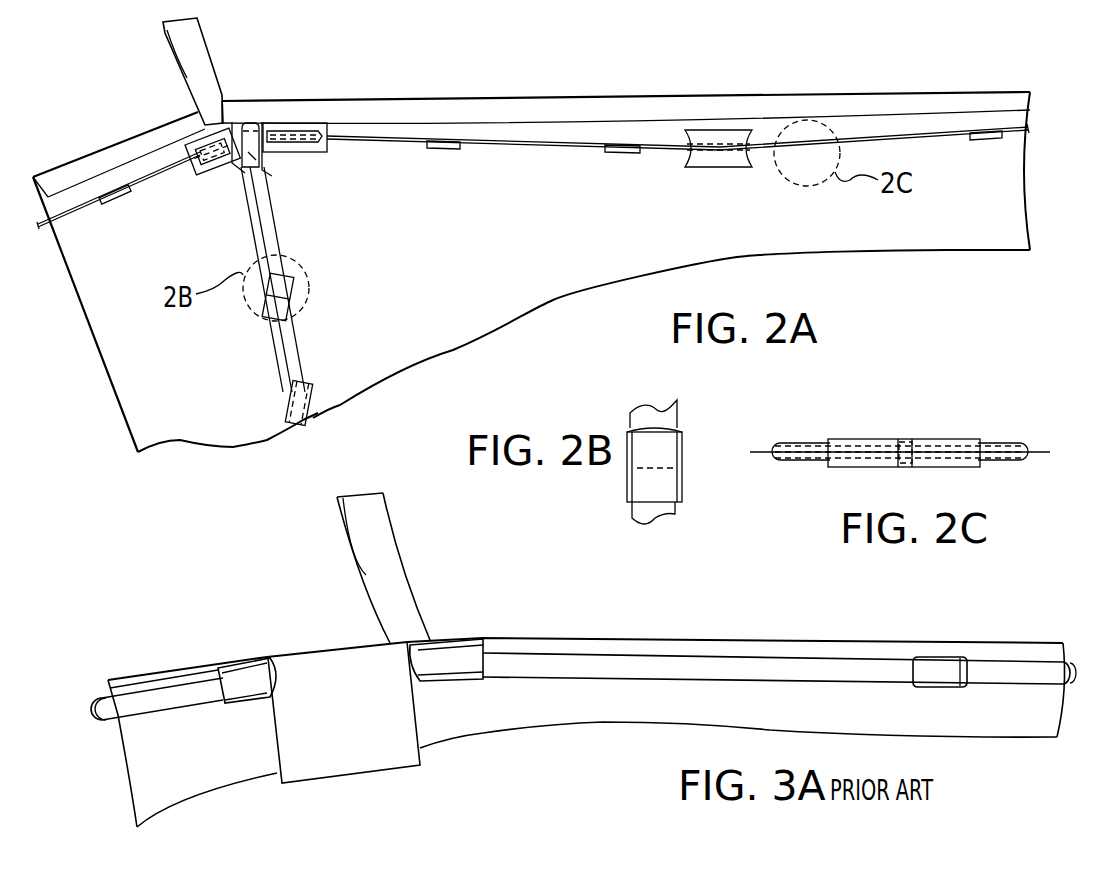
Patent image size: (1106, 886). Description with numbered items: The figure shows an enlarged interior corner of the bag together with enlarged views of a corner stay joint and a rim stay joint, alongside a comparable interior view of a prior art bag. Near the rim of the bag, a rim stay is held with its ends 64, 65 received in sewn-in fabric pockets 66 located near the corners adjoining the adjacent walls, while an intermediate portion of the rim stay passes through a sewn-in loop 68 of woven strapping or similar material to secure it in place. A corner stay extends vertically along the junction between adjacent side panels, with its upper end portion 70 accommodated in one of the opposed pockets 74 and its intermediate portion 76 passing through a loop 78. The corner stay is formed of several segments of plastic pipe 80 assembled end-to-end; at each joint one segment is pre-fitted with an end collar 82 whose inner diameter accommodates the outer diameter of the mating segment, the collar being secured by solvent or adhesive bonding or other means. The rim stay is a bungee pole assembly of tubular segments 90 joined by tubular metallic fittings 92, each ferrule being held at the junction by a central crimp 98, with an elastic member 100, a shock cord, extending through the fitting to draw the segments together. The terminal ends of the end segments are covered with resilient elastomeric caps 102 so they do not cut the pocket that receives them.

In FIG. 2A, the end of the rim stay 64 is at (197, 147).
In FIG. 2A, the end of the rim stay 65 is at (273, 135).
In FIG. 2A, the sewn-in fabric pocket 66 is at (197, 110).
In FIG. 2A, the sewn-in loop 68 is at (712, 137).
In FIG. 2A, the upper end portion 70 is at (228, 165).
In FIG. 2A, the opposed pocket 74 is at (250, 155).
In FIG. 2A, the intermediate portion 76 is at (342, 356).
In FIG. 2A, the loop 78 is at (290, 410).
In FIG. 2A, the segment of plastic pipe 80 is at (287, 332).
In FIG. 2B, the segment of plastic pipe 80 is at (640, 412).
In FIG. 2A, the end collar 82 is at (277, 287).
In FIG. 2B, the end collar 82 is at (623, 487).
In FIG. 2A, the tubular segment 90 is at (545, 150).
In FIG. 2C, the tubular segment 90 is at (997, 442).
In FIG. 2A, the fitting 92 is at (620, 150).
In FIG. 2C, the fitting 92 is at (927, 440).
In FIG. 2C, the central crimp 98 is at (905, 442).
In FIG. 2C, the elastic member 100 is at (763, 450).
In FIG. 2A, the resilient elastomeric cap 102 is at (266, 112).